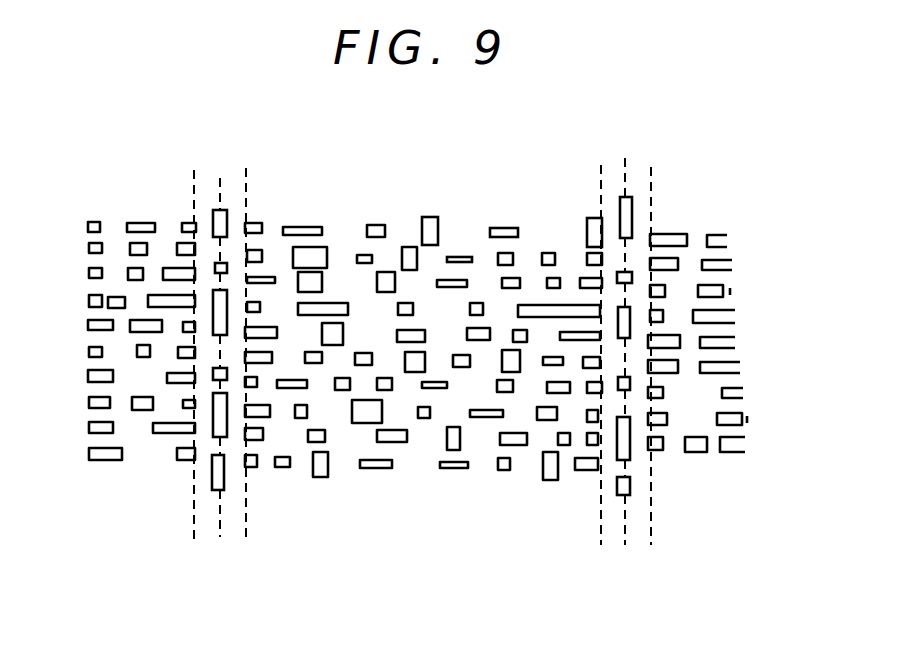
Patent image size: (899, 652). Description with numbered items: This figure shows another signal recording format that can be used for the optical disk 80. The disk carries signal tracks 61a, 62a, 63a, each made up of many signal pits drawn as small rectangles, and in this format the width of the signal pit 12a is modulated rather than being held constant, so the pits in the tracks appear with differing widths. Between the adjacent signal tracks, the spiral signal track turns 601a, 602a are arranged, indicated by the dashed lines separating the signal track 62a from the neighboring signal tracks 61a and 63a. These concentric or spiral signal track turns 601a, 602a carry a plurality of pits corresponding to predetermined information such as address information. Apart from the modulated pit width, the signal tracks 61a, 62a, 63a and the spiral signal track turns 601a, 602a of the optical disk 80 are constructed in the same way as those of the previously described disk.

The optical disk 80 is at (689, 159).
The signal pit 12a is at (462, 257).
The signal track 61a is at (808, 187).
The signal track 62a is at (599, 186).
The signal track 63a is at (192, 183).
The spiral signal track turn 601a is at (632, 538).
The spiral signal track turn 602a is at (227, 520).